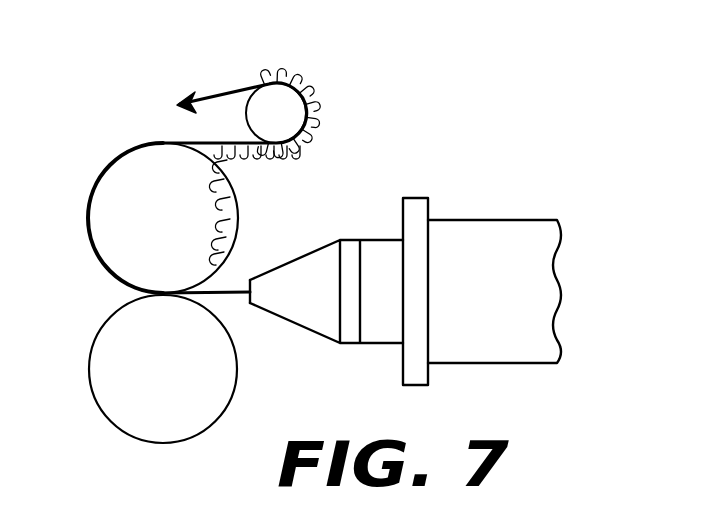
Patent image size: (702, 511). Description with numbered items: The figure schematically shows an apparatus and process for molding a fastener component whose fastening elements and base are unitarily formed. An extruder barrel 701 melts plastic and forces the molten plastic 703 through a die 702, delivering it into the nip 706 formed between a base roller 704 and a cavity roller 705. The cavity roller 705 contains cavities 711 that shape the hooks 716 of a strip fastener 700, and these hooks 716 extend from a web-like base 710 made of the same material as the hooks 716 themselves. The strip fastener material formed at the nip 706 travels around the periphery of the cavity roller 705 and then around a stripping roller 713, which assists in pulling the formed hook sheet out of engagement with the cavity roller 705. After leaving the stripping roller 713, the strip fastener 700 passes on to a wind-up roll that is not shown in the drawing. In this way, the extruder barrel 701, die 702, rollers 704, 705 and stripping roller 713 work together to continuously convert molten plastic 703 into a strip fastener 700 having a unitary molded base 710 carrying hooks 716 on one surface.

The strip fastener 700 is at (224, 92).
The extruder barrel 701 is at (456, 235).
The die 702 is at (328, 263).
The molten plastic 703 is at (250, 295).
The base roller 704 is at (182, 402).
The cavity roller 705 is at (170, 204).
The nip 706 is at (150, 292).
The web-like base 710 is at (193, 143).
The cavities 711 is at (240, 228).
The stripping roller 713 is at (270, 111).
The hooks 716 is at (331, 118).